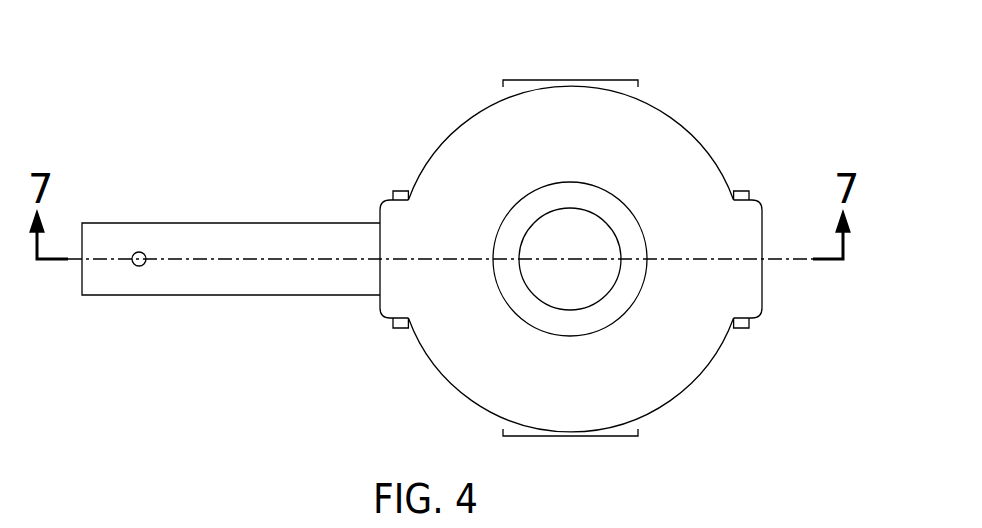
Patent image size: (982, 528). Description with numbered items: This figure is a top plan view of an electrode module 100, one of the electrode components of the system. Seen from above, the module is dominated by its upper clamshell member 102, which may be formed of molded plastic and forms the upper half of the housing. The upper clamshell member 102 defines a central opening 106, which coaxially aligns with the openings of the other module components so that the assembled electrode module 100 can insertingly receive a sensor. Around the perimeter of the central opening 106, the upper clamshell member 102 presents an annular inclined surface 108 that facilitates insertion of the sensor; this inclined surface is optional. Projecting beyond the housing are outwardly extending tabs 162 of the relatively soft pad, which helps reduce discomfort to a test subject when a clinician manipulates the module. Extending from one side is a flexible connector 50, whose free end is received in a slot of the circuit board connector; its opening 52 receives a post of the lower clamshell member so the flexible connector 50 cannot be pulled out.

The electrode module 100 is at (593, 258).
The upper clamshell member 102 is at (686, 363).
The central opening 106 is at (602, 226).
The annular inclined surface 108 is at (536, 203).
The outwardly extending tabs 162 is at (637, 430).
The flexible connector 50 is at (256, 295).
The opening 52 is at (131, 276).